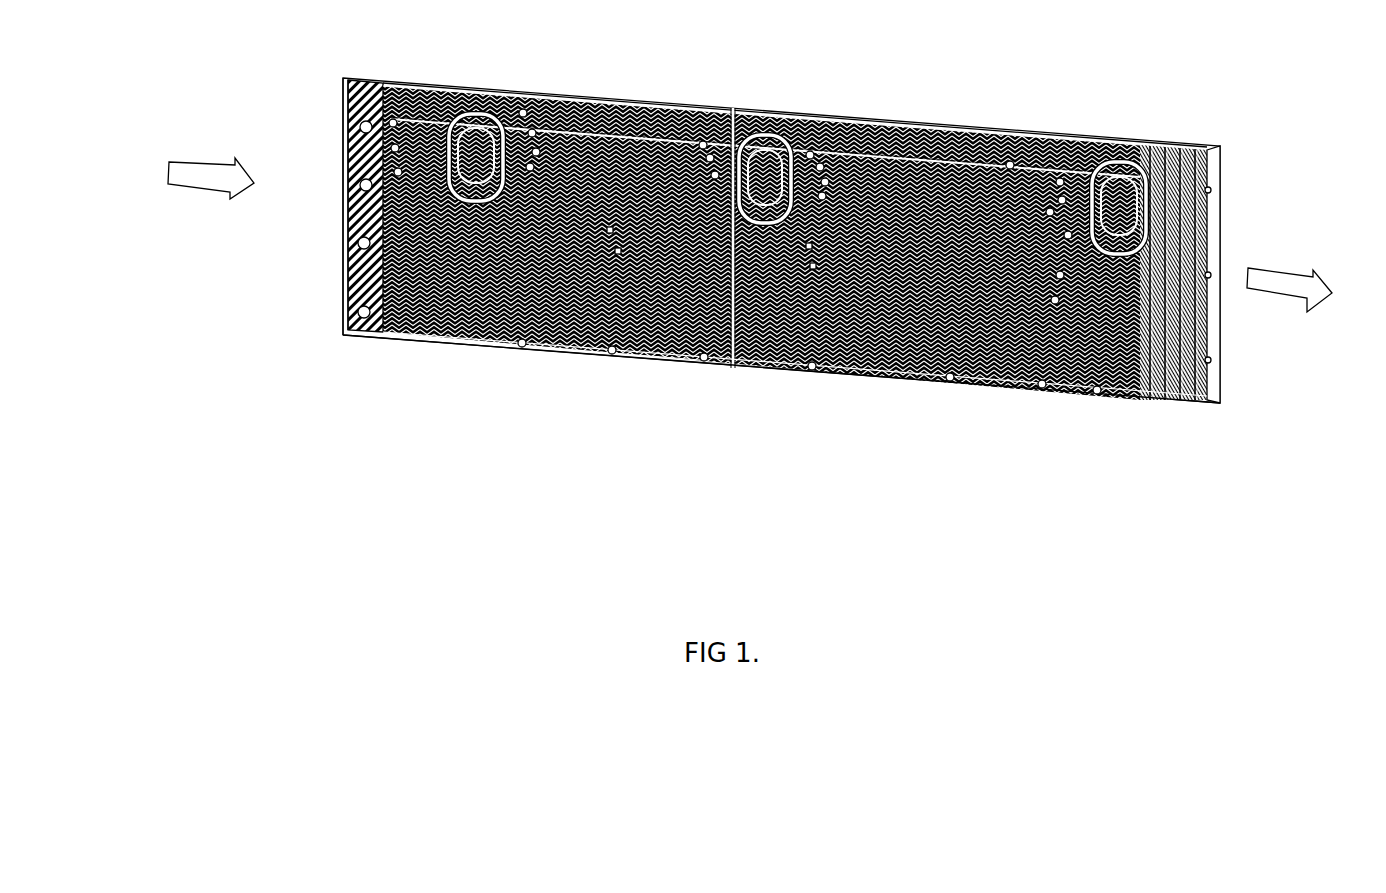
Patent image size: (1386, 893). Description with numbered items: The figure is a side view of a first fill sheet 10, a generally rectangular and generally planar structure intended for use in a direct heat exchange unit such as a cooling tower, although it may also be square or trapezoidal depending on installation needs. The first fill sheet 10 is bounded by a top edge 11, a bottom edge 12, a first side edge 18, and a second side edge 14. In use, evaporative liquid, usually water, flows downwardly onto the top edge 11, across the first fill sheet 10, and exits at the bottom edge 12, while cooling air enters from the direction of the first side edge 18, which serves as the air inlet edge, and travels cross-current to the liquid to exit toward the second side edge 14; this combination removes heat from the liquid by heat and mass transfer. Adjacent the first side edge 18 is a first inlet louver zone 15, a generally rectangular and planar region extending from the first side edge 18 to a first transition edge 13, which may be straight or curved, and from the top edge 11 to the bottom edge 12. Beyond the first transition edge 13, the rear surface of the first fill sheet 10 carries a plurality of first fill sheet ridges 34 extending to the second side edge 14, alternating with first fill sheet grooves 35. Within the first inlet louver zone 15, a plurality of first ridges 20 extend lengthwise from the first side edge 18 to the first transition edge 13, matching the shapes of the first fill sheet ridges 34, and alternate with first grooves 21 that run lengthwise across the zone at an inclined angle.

The first fill sheet 10 is at (757, 241).
The top edge 11 is at (773, 115).
The bottom edge 12 is at (558, 353).
The first transition edge 13 is at (417, 338).
The second side edge 14 is at (1220, 373).
The first inlet louver zone 15 is at (401, 110).
The first side edge 18 is at (343, 203).
The first ridges 20 is at (343, 167).
The first grooves 21 is at (343, 110).
The first fill sheet ridge 34 is at (655, 353).
The first fill sheet grooves 35 is at (703, 355).